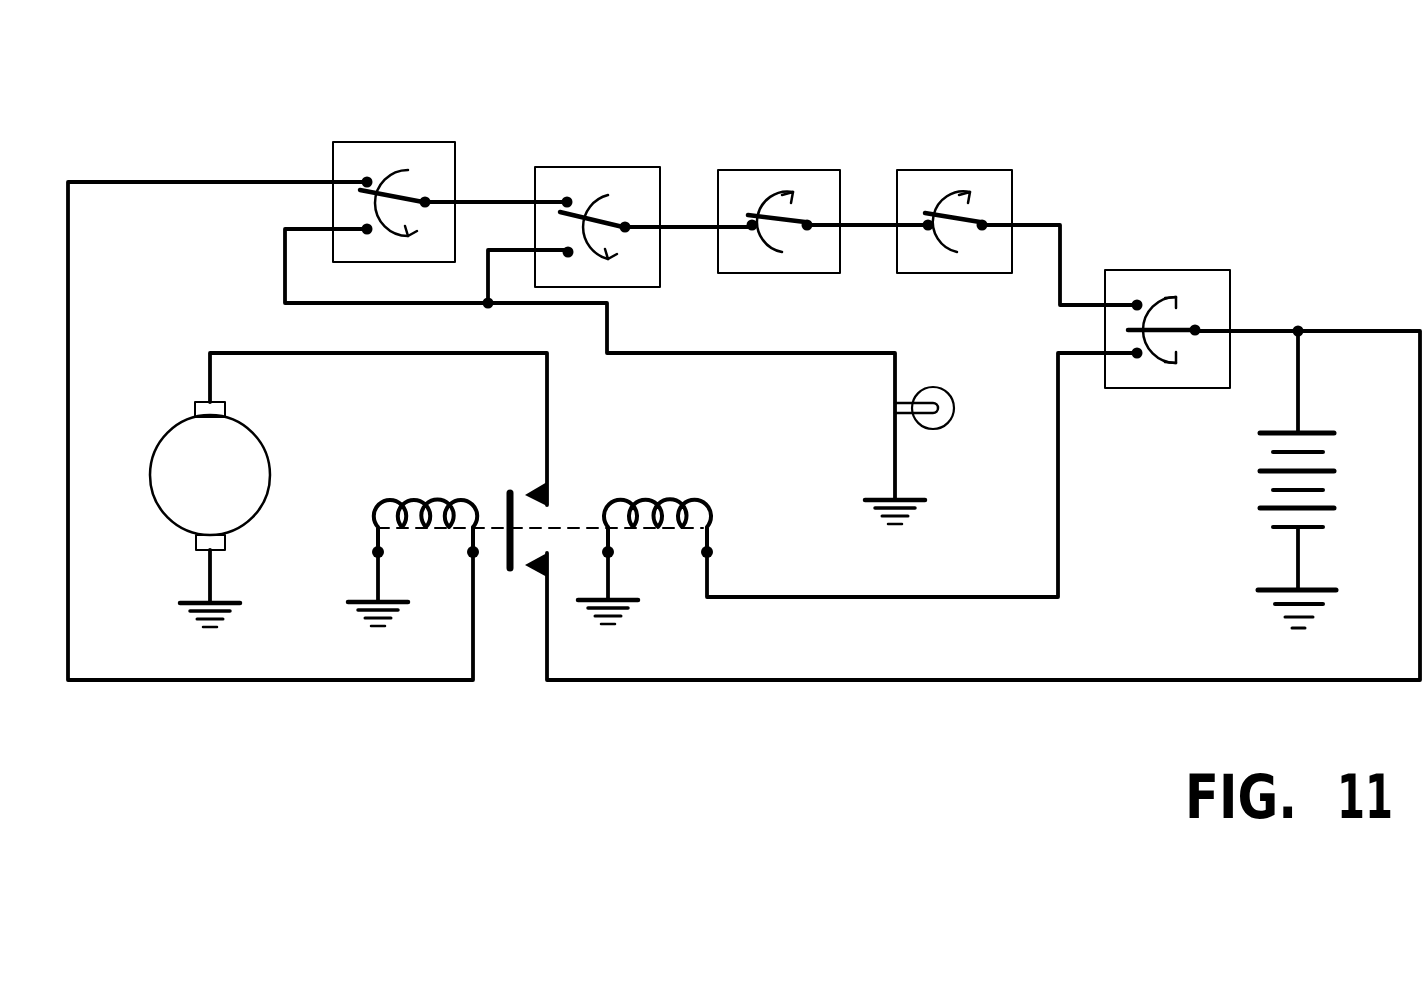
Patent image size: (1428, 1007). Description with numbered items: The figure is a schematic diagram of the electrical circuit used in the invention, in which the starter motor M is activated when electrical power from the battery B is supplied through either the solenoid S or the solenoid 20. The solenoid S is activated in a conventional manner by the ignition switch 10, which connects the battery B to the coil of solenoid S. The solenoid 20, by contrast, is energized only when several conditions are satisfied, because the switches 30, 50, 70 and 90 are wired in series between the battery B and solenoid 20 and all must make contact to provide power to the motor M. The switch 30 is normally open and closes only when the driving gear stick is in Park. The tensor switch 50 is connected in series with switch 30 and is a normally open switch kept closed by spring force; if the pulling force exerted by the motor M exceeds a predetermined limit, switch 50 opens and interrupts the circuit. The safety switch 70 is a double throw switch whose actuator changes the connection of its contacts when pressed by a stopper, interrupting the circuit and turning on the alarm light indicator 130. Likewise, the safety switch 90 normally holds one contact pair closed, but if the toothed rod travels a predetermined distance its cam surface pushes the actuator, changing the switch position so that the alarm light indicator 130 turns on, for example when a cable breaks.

The ignition switch 10 is at (1183, 260).
The solenoid 20 is at (440, 490).
The switch 30 is at (970, 160).
The tensor switch 50 is at (795, 160).
The safety switch 70 is at (608, 158).
The safety switch 90 is at (393, 130).
The alarm light indicator 130 is at (963, 388).
The starter motor M is at (275, 467).
The solenoid S is at (683, 490).
The battery B is at (1240, 470).